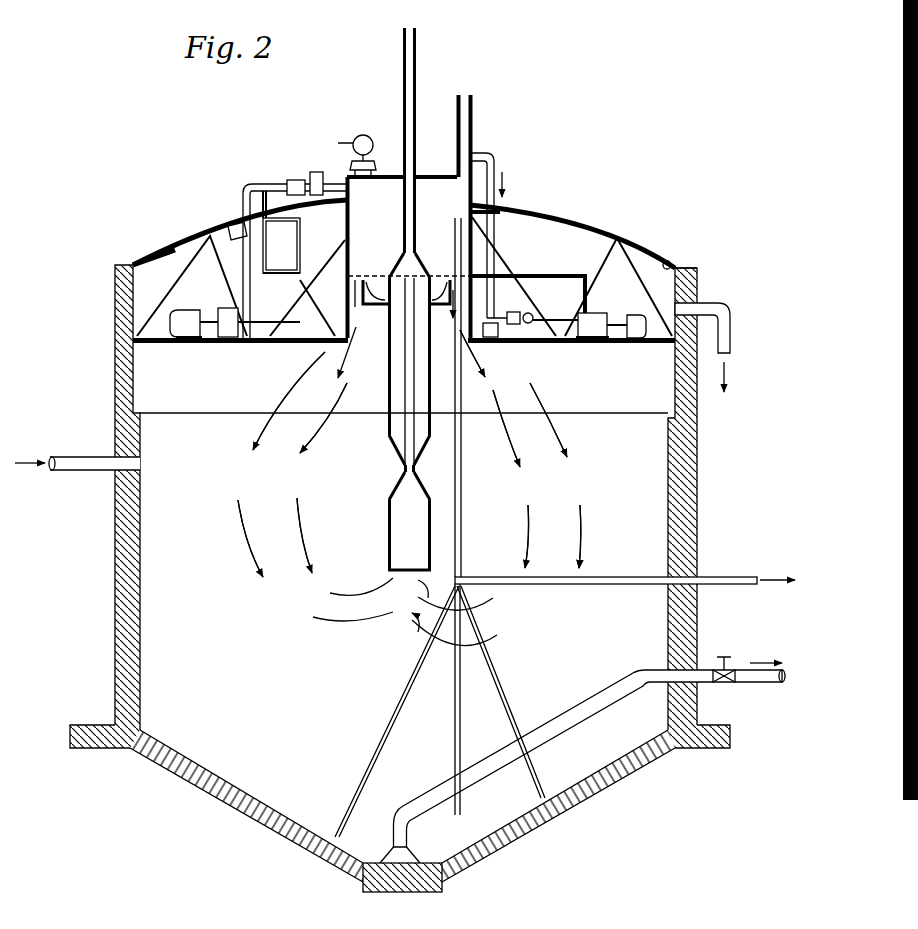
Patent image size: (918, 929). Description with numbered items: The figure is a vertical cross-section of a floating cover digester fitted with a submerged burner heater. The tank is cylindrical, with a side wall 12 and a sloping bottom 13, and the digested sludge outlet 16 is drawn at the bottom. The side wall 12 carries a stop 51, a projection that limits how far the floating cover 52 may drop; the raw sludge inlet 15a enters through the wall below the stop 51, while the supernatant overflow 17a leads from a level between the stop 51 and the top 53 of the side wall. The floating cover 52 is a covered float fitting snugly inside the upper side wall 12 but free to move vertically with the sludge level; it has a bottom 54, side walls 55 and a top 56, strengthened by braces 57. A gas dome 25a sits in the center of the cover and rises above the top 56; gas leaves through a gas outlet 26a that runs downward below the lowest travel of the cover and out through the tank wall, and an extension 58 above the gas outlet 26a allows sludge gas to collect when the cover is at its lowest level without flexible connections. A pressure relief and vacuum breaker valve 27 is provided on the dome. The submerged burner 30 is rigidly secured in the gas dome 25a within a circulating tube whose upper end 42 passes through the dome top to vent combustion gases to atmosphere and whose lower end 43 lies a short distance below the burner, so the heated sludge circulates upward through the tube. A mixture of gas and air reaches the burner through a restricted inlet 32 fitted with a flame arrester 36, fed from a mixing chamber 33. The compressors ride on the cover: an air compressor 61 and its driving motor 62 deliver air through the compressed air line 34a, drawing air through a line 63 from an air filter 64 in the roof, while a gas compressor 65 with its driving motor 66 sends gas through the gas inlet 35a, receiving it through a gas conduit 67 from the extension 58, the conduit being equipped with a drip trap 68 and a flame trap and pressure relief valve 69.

The side wall 12 is at (690, 477).
The sloping bottom 13 is at (560, 812).
The raw sludge inlet 15a is at (77, 457).
The digested sludge outlet 16 is at (578, 712).
The supernatant overflow 17a is at (731, 328).
The gas dome 25a is at (478, 176).
The gas outlet 26a is at (648, 577).
The pressure relief and vacuum breaker valve 27 is at (369, 137).
The submerged burner 30 is at (405, 473).
The restricted inlet 32 is at (430, 366).
The mixing chamber 33 is at (292, 180).
The compressed air line 34a is at (244, 195).
The gas inlet 35a is at (528, 272).
The flame arrester 36 is at (316, 172).
The upper end 42 is at (412, 30).
The lower end 43 is at (410, 575).
The stop 51 is at (675, 415).
The floating cover 52 is at (588, 230).
The top of the side wall 53 is at (692, 268).
The bottom 54 is at (210, 345).
The side walls 55 is at (668, 262).
The top 56 is at (180, 250).
The braces 57 is at (178, 236).
The extension 58 is at (473, 112).
The air compressor 61 is at (225, 310).
The driving motor 62 is at (173, 313).
The line 63 is at (298, 284).
The air filter 64 is at (230, 232).
The gas compressor 65 is at (598, 313).
The driving motor 66 is at (636, 316).
The gas conduit 67 is at (492, 212).
The drip trap 68 is at (498, 333).
The flame trap and pressure relief valve 69 is at (528, 312).